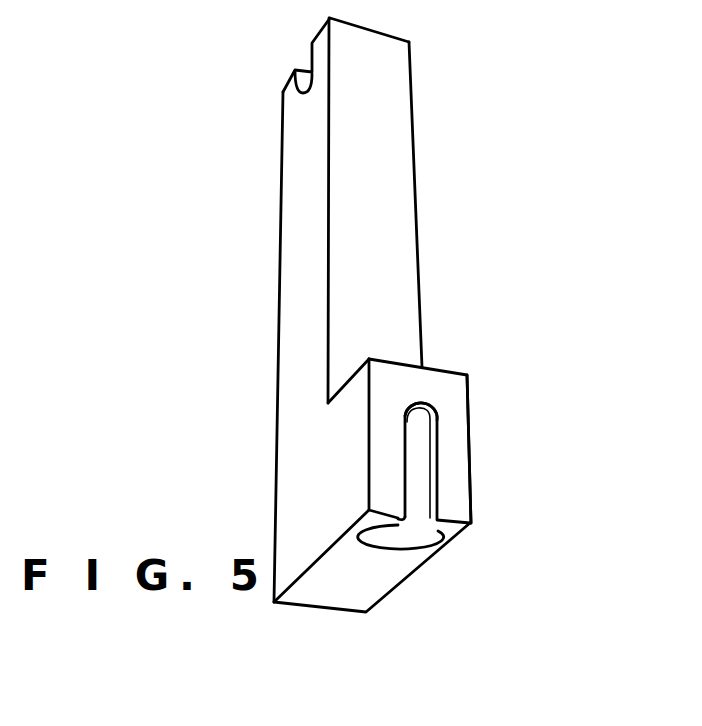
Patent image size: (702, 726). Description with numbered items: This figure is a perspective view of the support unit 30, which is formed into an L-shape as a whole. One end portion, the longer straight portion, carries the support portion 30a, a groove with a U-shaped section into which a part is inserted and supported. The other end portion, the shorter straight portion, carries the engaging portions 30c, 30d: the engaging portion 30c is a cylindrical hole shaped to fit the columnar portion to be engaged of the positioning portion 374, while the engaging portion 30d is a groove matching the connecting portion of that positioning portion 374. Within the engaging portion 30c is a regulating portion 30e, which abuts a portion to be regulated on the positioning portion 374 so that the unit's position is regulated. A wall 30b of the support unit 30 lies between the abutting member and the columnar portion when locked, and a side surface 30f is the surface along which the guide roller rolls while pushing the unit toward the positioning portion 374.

The support unit 30 is at (492, 148).
The support portion 30a is at (306, 65).
The wall 30b is at (433, 368).
The engaging portion 30c is at (403, 540).
The engaging portion 30d is at (432, 449).
The regulating portion 30e is at (408, 423).
The side surface 30f is at (462, 493).
The positioning portion 374 is at (117, 9).